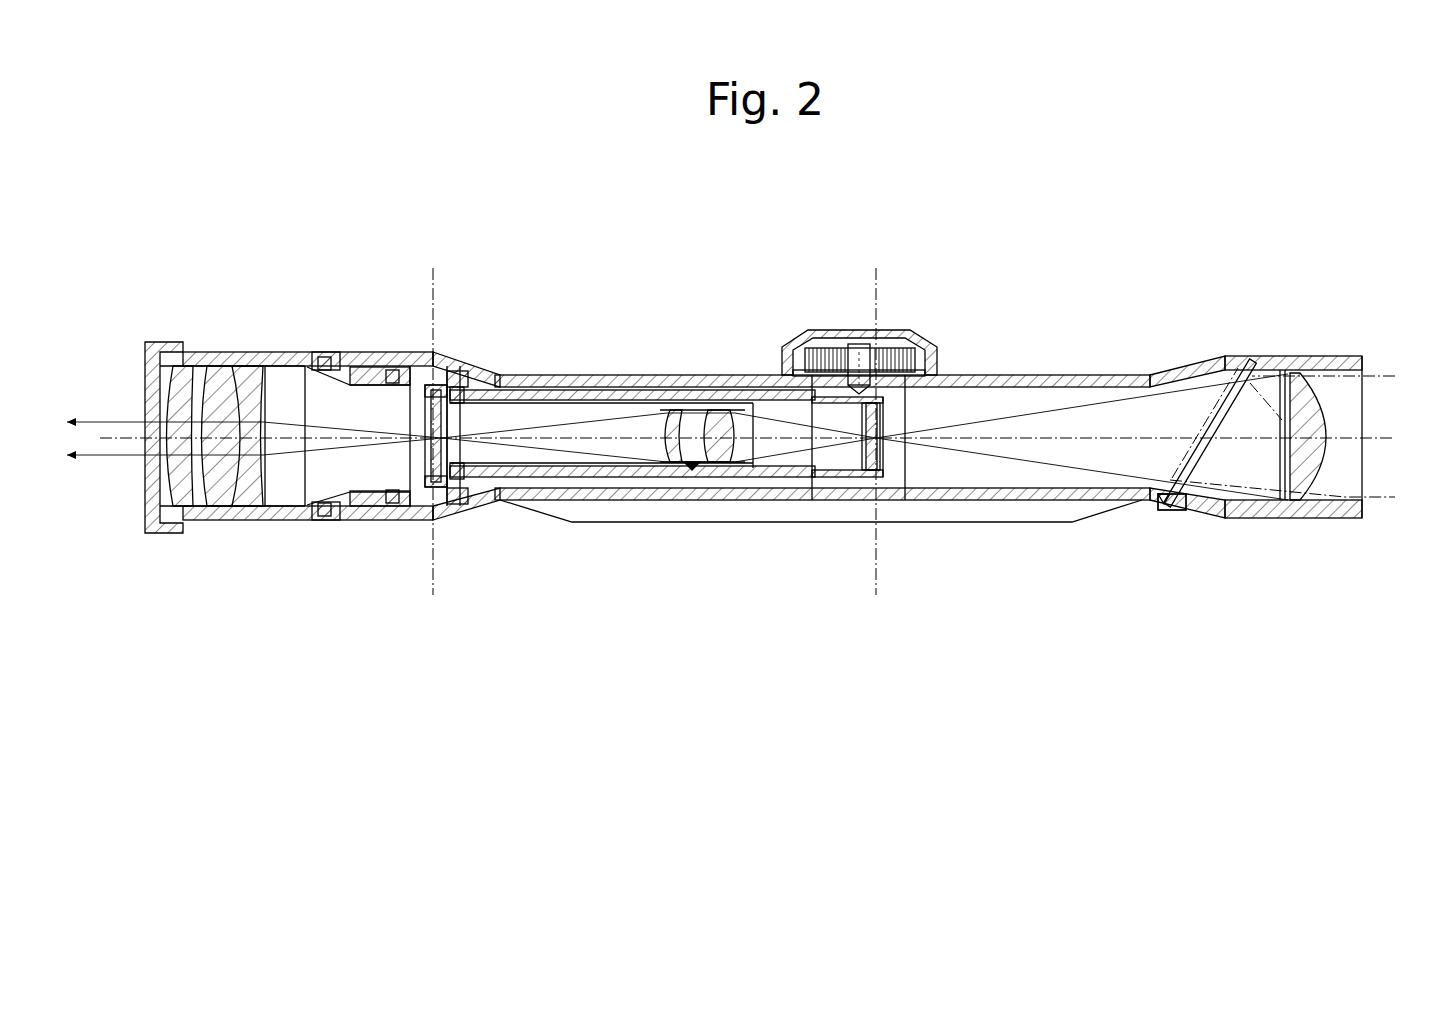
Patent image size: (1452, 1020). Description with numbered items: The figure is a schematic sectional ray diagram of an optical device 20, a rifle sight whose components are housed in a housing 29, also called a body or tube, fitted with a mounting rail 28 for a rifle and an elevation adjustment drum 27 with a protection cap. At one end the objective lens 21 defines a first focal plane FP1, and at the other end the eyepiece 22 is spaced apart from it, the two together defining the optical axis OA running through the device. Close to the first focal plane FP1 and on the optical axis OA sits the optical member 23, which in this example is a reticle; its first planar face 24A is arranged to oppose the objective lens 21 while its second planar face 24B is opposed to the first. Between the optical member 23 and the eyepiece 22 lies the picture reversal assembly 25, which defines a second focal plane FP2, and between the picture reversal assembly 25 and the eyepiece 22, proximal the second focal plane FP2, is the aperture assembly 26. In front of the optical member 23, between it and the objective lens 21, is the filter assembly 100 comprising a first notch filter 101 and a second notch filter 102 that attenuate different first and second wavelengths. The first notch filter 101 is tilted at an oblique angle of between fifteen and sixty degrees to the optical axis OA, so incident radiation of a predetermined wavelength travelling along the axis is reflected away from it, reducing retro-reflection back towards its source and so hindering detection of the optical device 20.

The optical device 20 is at (1187, 677).
The objective lens 21 is at (1322, 357).
The eyepiece 22 is at (195, 348).
The optical member 23 is at (858, 414).
The first planar face 24A is at (882, 470).
The second planar face 24B is at (863, 470).
The picture reversal assembly 25 is at (690, 468).
The aperture assembly 26 is at (428, 430).
The elevation adjustment drum 27 is at (890, 345).
The mounting rail 28 is at (685, 510).
The housing 29 is at (532, 375).
The filter assembly 100 is at (1252, 360).
The first notch filter 101 is at (1184, 508).
The second notch filter 102 is at (1184, 508).
The first focal plane FP1 is at (875, 418).
The second focal plane FP2 is at (435, 418).
The optical axis OA is at (768, 438).